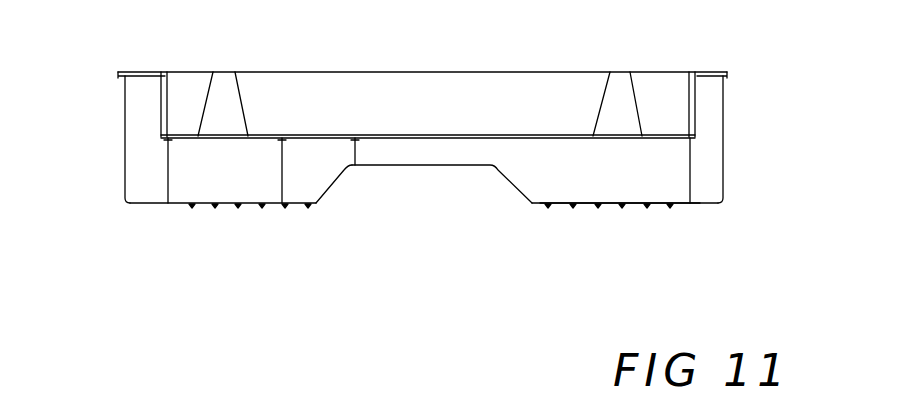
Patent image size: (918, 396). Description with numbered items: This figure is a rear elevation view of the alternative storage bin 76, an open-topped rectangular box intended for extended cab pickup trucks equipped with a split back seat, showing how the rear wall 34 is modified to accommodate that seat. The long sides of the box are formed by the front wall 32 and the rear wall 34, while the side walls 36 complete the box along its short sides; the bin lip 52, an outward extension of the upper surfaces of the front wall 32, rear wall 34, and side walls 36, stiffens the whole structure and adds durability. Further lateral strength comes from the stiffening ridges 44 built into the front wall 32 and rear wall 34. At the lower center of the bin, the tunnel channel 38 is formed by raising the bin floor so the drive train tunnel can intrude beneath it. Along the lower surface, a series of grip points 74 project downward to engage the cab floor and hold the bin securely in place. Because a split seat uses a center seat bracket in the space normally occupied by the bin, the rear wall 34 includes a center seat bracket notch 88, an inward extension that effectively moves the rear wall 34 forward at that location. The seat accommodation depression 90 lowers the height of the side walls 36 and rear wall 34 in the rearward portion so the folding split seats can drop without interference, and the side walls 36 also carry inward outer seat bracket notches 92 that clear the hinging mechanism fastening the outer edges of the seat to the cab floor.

The front wall 32 is at (525, 83).
The rear wall 34 is at (513, 158).
The side wall 36 is at (122, 132).
The tunnel channel 38 is at (428, 170).
The stiffening ridges 44 is at (222, 92).
The bin lip 52 is at (715, 67).
The grip points 74 is at (285, 212).
The alternative storage bin 76 is at (675, 237).
The center seat bracket notch 88 is at (313, 162).
The seat accommodation depression 90 is at (222, 148).
The outer seat bracket notches 92 is at (147, 165).